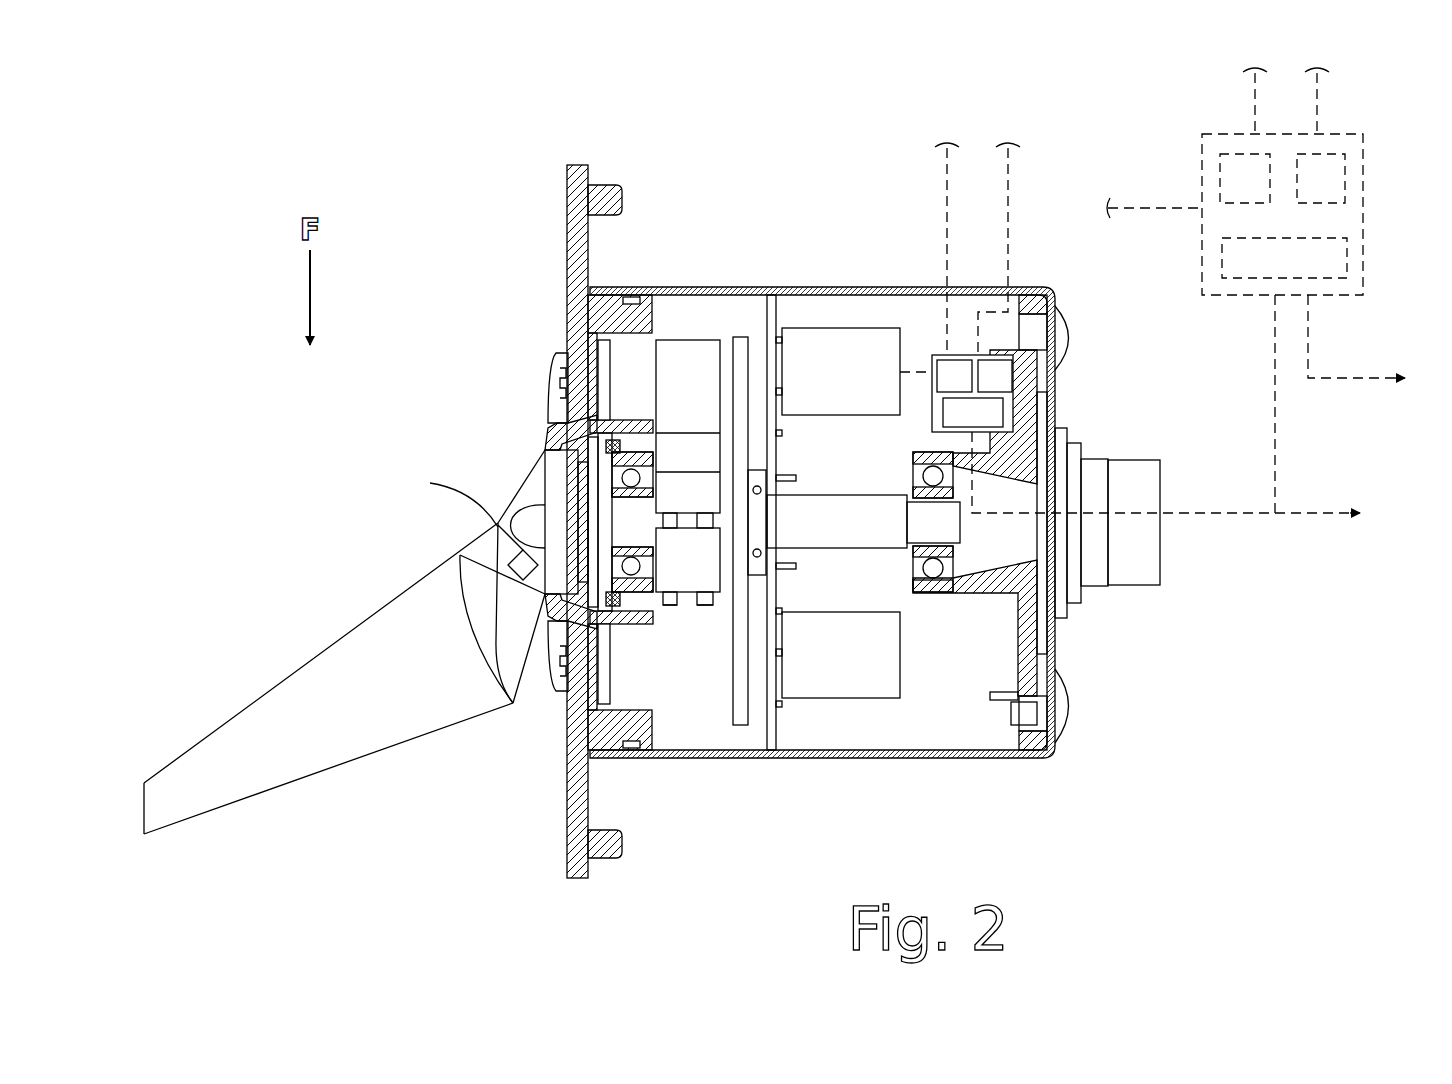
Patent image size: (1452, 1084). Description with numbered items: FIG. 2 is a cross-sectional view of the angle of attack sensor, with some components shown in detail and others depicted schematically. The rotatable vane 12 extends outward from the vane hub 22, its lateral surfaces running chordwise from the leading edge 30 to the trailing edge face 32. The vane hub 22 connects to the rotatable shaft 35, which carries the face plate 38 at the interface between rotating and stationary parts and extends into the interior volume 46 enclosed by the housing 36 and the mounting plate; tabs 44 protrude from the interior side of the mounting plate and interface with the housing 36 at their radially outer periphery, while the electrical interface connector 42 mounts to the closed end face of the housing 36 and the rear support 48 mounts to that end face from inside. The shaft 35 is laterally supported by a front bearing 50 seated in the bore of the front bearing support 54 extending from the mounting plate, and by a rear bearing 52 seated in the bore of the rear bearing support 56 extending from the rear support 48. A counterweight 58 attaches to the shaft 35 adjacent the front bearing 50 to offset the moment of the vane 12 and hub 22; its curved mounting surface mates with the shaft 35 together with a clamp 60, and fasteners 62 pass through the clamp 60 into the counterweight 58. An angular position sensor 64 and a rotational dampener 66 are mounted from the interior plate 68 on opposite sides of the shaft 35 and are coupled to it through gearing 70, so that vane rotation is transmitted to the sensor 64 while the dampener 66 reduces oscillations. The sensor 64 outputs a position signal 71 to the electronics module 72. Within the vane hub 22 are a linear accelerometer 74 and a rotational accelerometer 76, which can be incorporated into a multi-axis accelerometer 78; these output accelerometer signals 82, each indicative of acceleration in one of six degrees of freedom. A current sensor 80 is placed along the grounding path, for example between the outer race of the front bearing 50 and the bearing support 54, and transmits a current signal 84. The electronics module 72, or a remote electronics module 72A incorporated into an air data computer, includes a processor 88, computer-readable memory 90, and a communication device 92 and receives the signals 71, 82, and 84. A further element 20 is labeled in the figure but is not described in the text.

The rotatable vane 12 is at (203, 665).
The mounting plate 20 is at (570, 262).
The vane hub 22 is at (527, 478).
The leading edge 30 is at (317, 653).
The trailing edge face 32 is at (140, 800).
The rotatable shaft 35 is at (832, 493).
The housing 36 is at (852, 287).
The face plate 38 is at (548, 400).
The electrical interface connector 42 is at (1116, 459).
The tabs 44 is at (652, 312).
The interior volume 46 is at (811, 688).
The rear support 48 is at (1017, 673).
The front bearing 50 is at (653, 463).
The rear bearing 52 is at (913, 565).
The front bearing support 54 is at (620, 418).
The rear bearing support 56 is at (980, 597).
The counterweight 58 is at (700, 337).
The clamp 60 is at (685, 600).
The fasteners 62 is at (707, 605).
The angular position sensor 64 is at (841, 371).
The rotational dampener 66 is at (841, 655).
The interior plate 68 is at (783, 727).
The gearing 70 is at (740, 337).
The position signal 71 is at (916, 370).
The electronics module 72 is at (960, 355).
The electronics module 72A is at (1363, 208).
The linear accelerometer 74 is at (512, 522).
The rotational accelerometer 76 is at (523, 565).
The multi-axis accelerometer 78 is at (510, 537).
The current sensor 80 is at (620, 440).
The accelerometer signals 82 is at (1101, 199).
The current signal 84 is at (1155, 199).
The processor 88 is at (1103, 273).
The computer-readable memory 90 is at (1161, 273).
The communication device 92 is at (1145, 332).